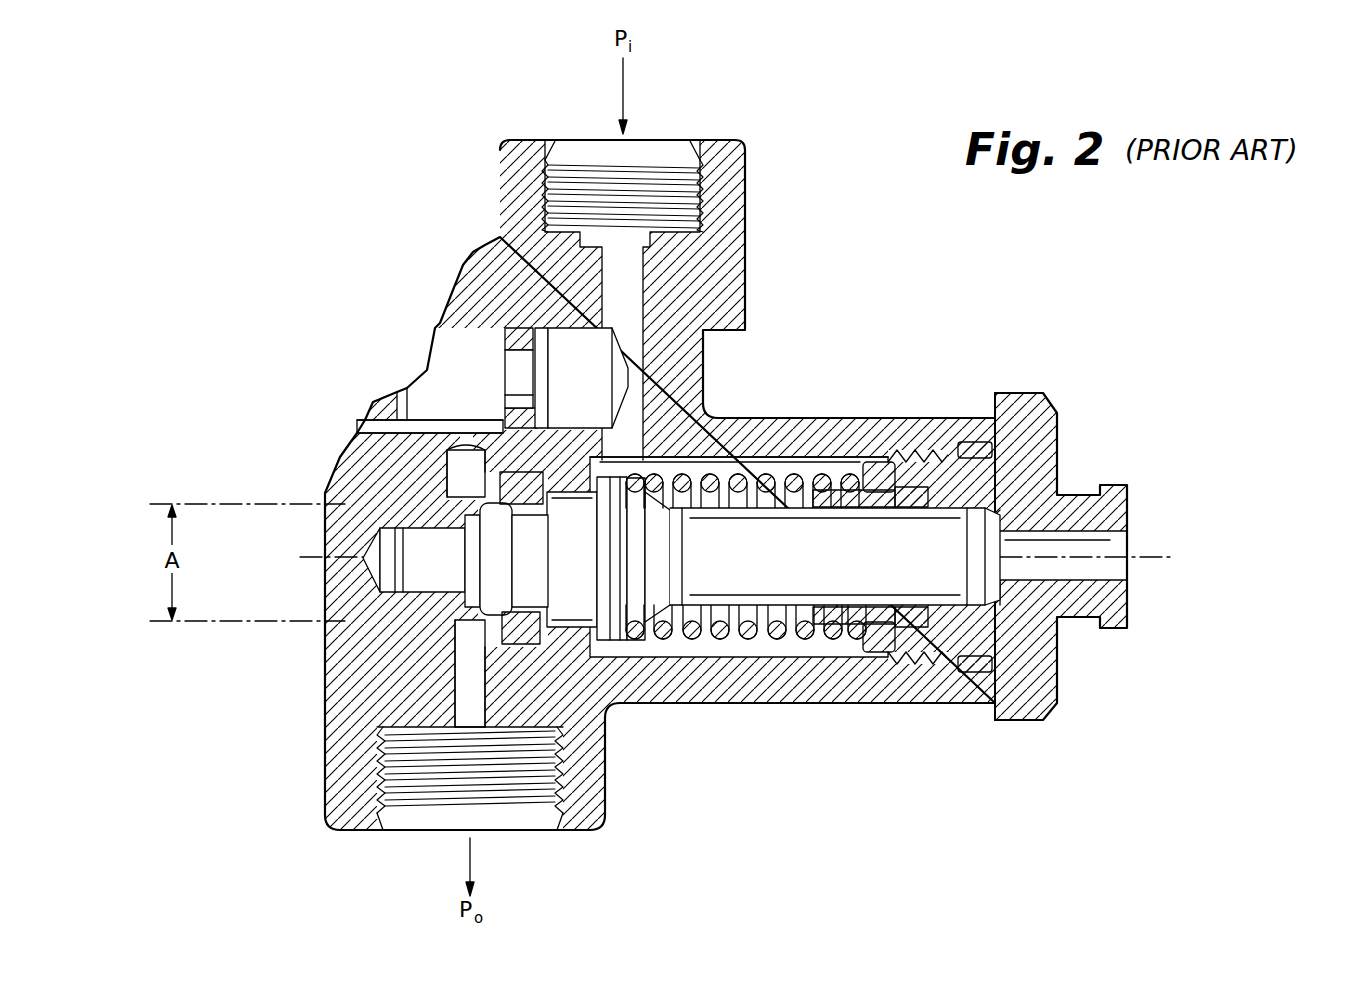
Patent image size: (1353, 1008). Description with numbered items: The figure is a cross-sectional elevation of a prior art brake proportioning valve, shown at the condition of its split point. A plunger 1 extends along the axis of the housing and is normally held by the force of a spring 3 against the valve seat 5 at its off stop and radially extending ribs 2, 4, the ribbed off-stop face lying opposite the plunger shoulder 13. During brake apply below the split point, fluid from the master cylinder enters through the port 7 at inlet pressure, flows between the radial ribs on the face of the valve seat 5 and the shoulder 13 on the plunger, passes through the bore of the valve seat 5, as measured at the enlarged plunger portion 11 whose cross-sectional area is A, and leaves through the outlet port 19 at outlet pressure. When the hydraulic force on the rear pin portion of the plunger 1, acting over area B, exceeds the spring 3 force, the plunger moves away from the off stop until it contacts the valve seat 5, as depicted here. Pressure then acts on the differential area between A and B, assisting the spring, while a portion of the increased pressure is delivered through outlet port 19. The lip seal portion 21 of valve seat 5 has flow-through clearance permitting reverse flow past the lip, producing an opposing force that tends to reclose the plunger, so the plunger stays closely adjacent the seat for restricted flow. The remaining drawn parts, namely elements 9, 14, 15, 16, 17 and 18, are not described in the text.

The plunger 1 is at (945, 510).
The valve seat and seal 2, 4 is at (508, 410).
The spring 3 is at (800, 475).
The valve seat 5 is at (470, 640).
The port 7 is at (710, 140).
The spring chamber 9 is at (750, 457).
The enlarged plunger portion 11 is at (445, 615).
The plunger shoulder 13 is at (515, 628).
The plug flange 14 is at (1030, 393).
The valve body 15 is at (575, 588).
The seal ring 16 is at (913, 490).
The passage 17 is at (467, 492).
The rod 18 is at (1000, 527).
The outlet port 19 is at (560, 820).
The lip seal portion 21 is at (390, 460).